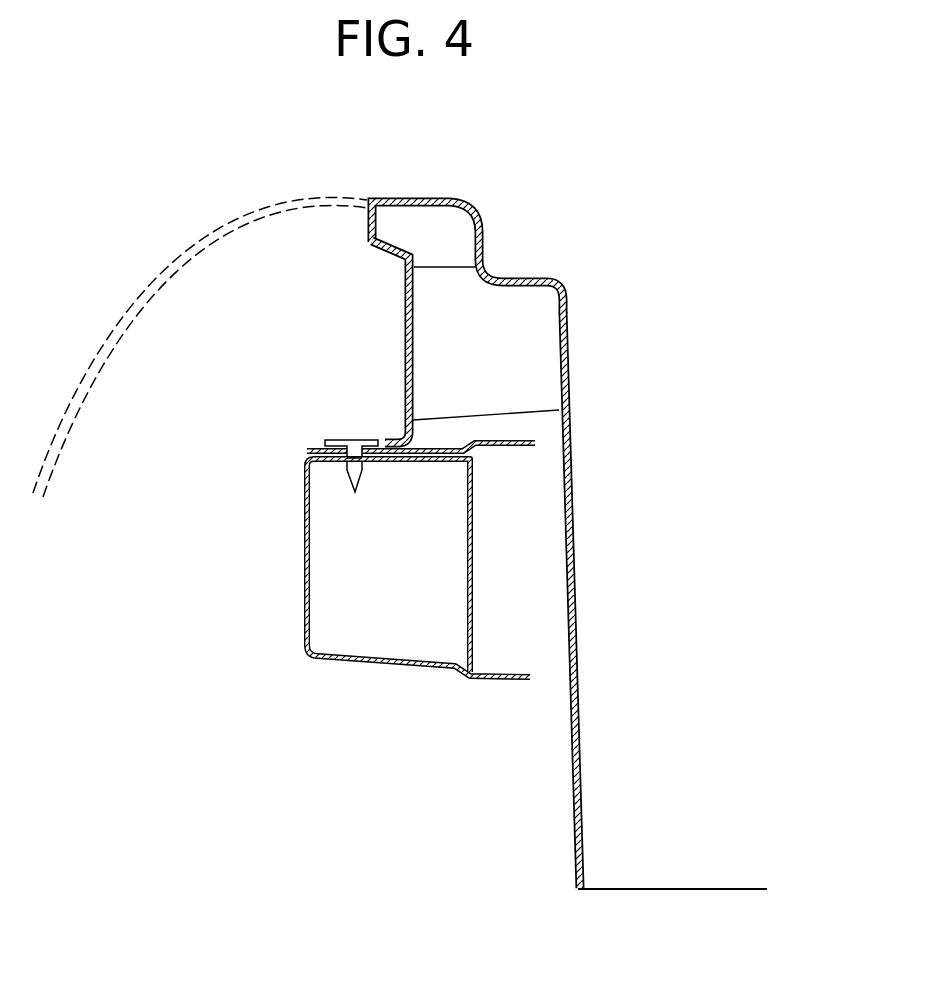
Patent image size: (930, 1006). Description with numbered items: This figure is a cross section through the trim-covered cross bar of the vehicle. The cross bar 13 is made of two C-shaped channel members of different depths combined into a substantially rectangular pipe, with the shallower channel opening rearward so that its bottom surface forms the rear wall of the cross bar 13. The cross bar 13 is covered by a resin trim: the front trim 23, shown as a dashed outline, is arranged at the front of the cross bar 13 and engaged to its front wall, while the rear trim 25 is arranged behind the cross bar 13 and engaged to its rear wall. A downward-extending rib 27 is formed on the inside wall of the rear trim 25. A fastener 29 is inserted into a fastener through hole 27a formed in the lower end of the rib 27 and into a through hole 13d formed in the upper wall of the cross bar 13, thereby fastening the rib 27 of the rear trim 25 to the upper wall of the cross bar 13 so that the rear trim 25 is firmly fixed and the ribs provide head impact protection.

The cross bar 13 is at (303, 550).
The through hole 13d is at (360, 457).
The front trim 23 is at (255, 213).
The rear trim 25 is at (527, 278).
The rib 27 is at (490, 343).
The fastener through hole 27a is at (350, 437).
The fastener 29 is at (360, 437).